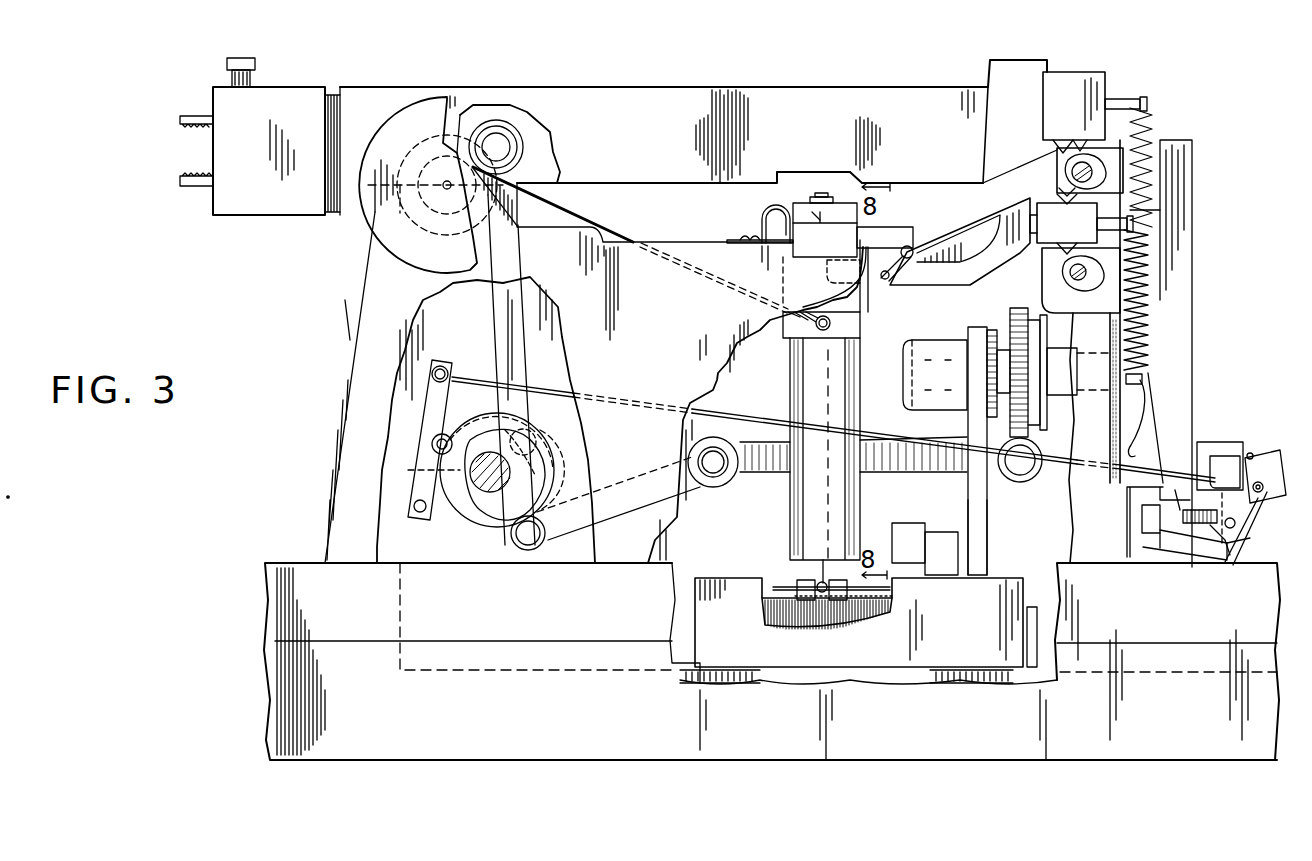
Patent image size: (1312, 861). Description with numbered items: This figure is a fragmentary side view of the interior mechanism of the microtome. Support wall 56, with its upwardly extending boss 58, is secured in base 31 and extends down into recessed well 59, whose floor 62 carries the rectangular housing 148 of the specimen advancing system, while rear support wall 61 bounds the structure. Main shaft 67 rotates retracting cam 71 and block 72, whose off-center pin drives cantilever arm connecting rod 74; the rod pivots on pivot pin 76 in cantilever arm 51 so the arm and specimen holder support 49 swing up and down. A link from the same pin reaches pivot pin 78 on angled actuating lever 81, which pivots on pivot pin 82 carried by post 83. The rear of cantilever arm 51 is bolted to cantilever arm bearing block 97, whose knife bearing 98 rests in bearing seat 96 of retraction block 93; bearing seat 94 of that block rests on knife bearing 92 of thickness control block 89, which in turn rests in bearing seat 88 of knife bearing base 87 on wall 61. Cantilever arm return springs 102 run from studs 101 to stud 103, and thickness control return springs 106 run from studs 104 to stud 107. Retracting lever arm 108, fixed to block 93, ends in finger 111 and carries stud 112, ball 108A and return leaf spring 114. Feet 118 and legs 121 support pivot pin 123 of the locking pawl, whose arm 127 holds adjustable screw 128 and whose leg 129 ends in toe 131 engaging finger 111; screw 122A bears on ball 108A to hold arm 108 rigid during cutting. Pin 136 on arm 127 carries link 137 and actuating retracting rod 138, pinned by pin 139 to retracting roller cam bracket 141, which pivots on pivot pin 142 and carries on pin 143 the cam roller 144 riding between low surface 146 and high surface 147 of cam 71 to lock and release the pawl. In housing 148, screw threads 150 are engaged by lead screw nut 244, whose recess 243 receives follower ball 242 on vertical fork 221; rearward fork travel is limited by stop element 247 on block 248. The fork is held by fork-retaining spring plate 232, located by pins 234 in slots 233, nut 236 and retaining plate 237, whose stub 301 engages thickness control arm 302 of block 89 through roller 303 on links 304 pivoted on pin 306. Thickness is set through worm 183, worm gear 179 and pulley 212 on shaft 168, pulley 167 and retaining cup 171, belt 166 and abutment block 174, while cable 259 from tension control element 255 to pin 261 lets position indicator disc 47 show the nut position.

The base 31 is at (1255, 719).
The position indicator disc 47 is at (390, 125).
The specimen holder support 49 is at (283, 95).
The cantilever arm 51 is at (539, 86).
The support wall 56 is at (372, 315).
The boss 58 is at (420, 156).
The recessed well 59 is at (672, 612).
The rear support wall 61 is at (1081, 540).
The floor 62 is at (672, 667).
The main shaft 67 is at (493, 492).
The retracting cam 71 is at (467, 500).
The block 72 is at (548, 463).
The cantilever arm connecting rod 74 is at (520, 336).
The pivot pin 76 is at (505, 146).
The pivot pin 78 is at (528, 551).
The angled actuating lever 81 is at (552, 522).
The pivot pin 82 is at (714, 478).
The post 83 is at (717, 451).
The knife bearing base 87 is at (1059, 308).
The V-shaped bearing seat 88 is at (1081, 280).
The thickness control block 89 is at (1053, 233).
The V-shaped knife bearing 92 is at (1060, 199).
The retraction block 93 is at (1118, 150).
The V-shaped bearing seat 94 is at (1062, 183).
The V-shaped bearing seat 96 is at (1058, 147).
The cantilever arm bearing block 97 is at (1068, 82).
The V-shaped knife bearing 98 is at (1083, 143).
The studs 101 is at (1128, 100).
The cantilever arm return spring 102 is at (1150, 122).
The stud 103 is at (1150, 336).
The studs 104 is at (1156, 210).
The thickness control return spring 106 is at (1150, 372).
The stud 107 is at (1145, 380).
The retracting lever arm 108 is at (1186, 276).
The ball 108A is at (1187, 525).
The finger 111 is at (1192, 525).
The stud 112 is at (1215, 450).
The return leaf spring 114 is at (1192, 447).
The feet 118 is at (1135, 498).
The leg 121 is at (1226, 546).
The screw 122A is at (1216, 543).
The pivot pin 123 is at (1235, 528).
The arm 127 is at (1256, 506).
The adjustable screw 128 is at (1264, 488).
The leg 129 is at (1205, 552).
The toe 131 is at (1140, 544).
The pin 136 is at (1234, 476).
The link 137 is at (1252, 456).
The actuating retracting rod 138 is at (716, 393).
The pin 139 is at (449, 367).
The retracting roller cam bracket 141 is at (430, 397).
The pivot pin 142 is at (418, 513).
The pin 143 is at (437, 445).
The cam roller 144 is at (468, 428).
The low surface 146 is at (432, 476).
The high surface 147 is at (546, 492).
The rectangular housing 148 is at (926, 627).
The screw threads 150 is at (791, 616).
The belt 166 is at (980, 330).
The pulley 167 is at (986, 418).
The shaft 168 is at (1067, 366).
The retaining cup 171 is at (946, 340).
The abutment block 174 is at (990, 522).
The worm gear 179 is at (1033, 306).
The worm 183 is at (1028, 472).
The pulley 212 is at (1047, 410).
The vertical fork 221 is at (806, 393).
The fork-retaining spring plate 232 is at (842, 182).
The slots 233 is at (812, 212).
The vertical pin 234 is at (825, 230).
The nut 236 is at (824, 187).
The retaining plate 237 is at (780, 232).
The follower ball 242 is at (816, 582).
The recess 243 is at (832, 612).
The lead screw nut 244 is at (805, 585).
The stop element 247 is at (926, 526).
The block 248 is at (941, 553).
The tension control element 255 is at (446, 224).
The cable 259 is at (600, 228).
The pin 261 is at (793, 340).
The stub 301 is at (886, 232).
The thickness control arm 302 is at (966, 272).
The roller 303 is at (912, 248).
The links 304 is at (886, 279).
The pin 306 is at (847, 294).